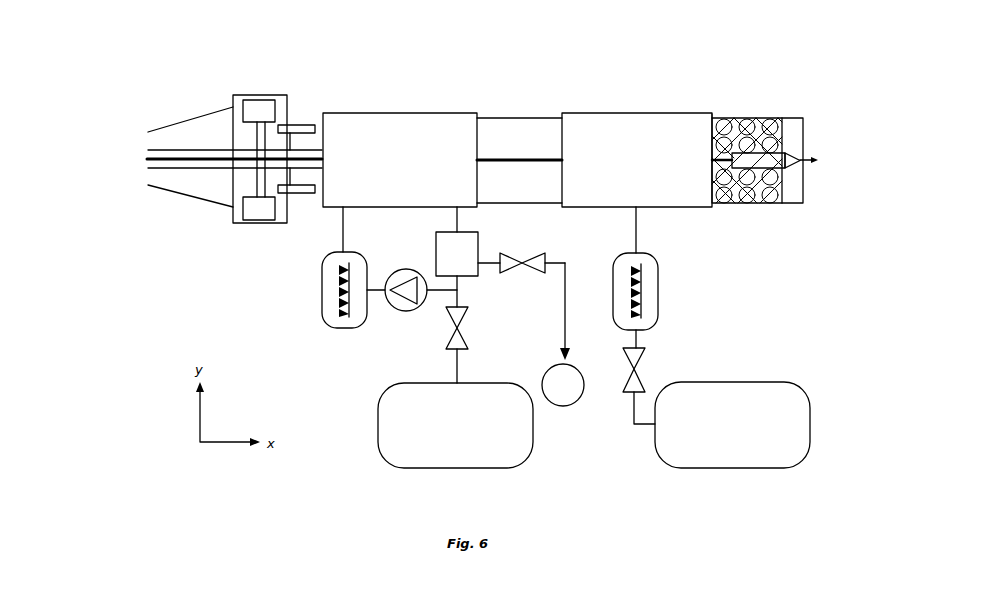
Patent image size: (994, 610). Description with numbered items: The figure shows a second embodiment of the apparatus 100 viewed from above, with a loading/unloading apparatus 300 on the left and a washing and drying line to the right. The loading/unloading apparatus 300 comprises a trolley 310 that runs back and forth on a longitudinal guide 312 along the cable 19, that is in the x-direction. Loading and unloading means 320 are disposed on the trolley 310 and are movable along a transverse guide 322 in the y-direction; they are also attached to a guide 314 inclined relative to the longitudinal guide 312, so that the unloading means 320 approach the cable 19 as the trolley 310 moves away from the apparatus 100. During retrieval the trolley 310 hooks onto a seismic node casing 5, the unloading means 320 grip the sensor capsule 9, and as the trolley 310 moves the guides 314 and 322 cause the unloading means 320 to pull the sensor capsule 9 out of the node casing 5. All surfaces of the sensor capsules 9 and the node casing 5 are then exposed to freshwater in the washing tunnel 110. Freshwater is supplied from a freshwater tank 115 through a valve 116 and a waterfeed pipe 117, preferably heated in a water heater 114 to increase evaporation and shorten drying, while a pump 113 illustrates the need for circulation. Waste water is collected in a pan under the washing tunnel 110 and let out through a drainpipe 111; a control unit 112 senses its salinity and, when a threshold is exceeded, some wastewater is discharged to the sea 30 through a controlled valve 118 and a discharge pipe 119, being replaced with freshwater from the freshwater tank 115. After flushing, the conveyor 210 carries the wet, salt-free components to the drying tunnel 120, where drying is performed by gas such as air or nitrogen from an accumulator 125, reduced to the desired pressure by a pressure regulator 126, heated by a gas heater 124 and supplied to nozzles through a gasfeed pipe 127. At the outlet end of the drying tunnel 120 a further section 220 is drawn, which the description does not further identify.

The apparatus 100 is at (516, 31).
The loading/unloading apparatus 300 is at (210, 65).
The trolley 310 is at (247, 225).
The longitudinal guide 312 is at (212, 150).
The inclined guide 314 is at (165, 190).
The loading and unloading means 320 is at (257, 103).
The transverse guide 322 is at (257, 167).
The node casing 5 is at (307, 155).
The sensor capsule 9 is at (302, 115).
The washing tunnel 110 is at (400, 160).
The cable 19 is at (490, 162).
The conveyor 210 is at (500, 118).
The drying tunnel 120 is at (637, 160).
The outlet filter section 220 is at (733, 118).
The gasfeed pipe 127 is at (634, 211).
The drainpipe 111 is at (457, 213).
The control unit 112 is at (480, 253).
The waterfeed pipe 117 is at (342, 237).
The water heater 114 is at (320, 282).
The pump 113 is at (391, 305).
The valve 116 is at (452, 328).
The controlled valve 118 is at (520, 277).
The discharge pipe 119 is at (563, 310).
The sea 30 is at (563, 385).
The gas heater 124 is at (660, 288).
The pressure regulator 126 is at (636, 369).
The freshwater tank 115 is at (455, 425).
The accumulator 125 is at (732, 425).